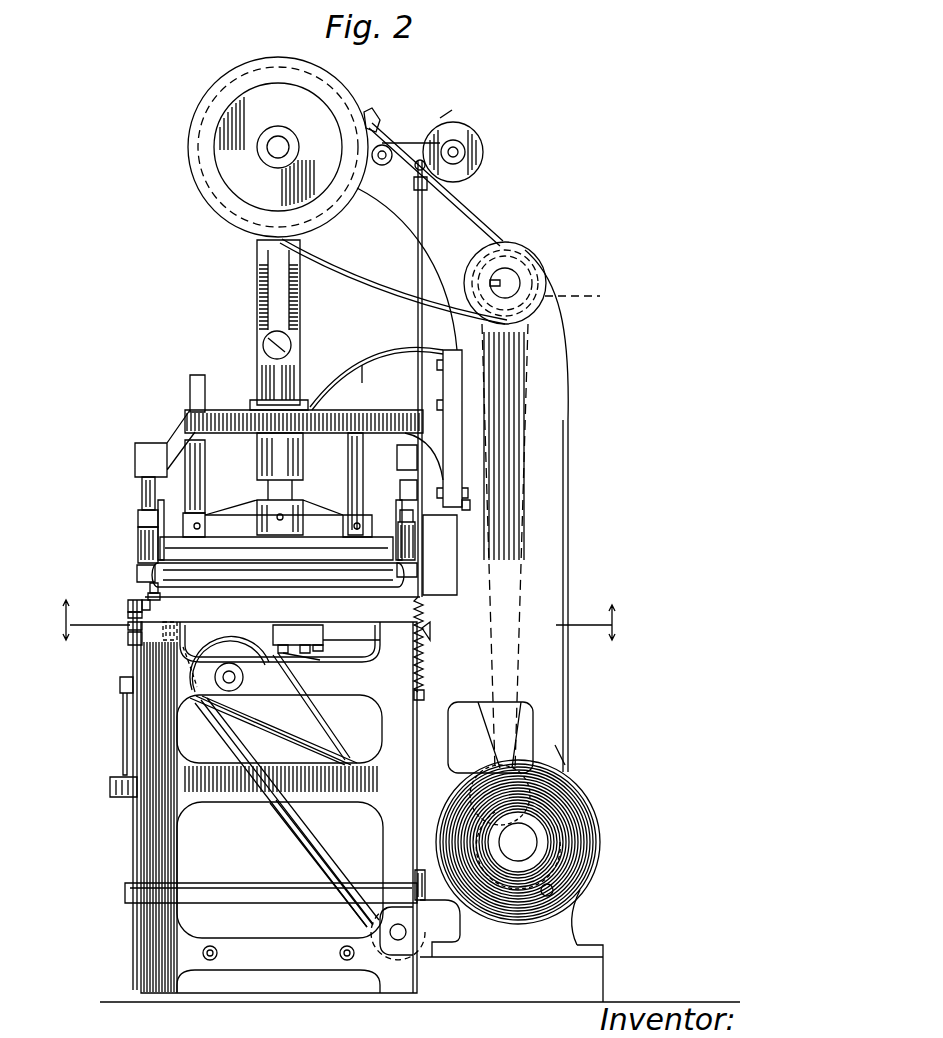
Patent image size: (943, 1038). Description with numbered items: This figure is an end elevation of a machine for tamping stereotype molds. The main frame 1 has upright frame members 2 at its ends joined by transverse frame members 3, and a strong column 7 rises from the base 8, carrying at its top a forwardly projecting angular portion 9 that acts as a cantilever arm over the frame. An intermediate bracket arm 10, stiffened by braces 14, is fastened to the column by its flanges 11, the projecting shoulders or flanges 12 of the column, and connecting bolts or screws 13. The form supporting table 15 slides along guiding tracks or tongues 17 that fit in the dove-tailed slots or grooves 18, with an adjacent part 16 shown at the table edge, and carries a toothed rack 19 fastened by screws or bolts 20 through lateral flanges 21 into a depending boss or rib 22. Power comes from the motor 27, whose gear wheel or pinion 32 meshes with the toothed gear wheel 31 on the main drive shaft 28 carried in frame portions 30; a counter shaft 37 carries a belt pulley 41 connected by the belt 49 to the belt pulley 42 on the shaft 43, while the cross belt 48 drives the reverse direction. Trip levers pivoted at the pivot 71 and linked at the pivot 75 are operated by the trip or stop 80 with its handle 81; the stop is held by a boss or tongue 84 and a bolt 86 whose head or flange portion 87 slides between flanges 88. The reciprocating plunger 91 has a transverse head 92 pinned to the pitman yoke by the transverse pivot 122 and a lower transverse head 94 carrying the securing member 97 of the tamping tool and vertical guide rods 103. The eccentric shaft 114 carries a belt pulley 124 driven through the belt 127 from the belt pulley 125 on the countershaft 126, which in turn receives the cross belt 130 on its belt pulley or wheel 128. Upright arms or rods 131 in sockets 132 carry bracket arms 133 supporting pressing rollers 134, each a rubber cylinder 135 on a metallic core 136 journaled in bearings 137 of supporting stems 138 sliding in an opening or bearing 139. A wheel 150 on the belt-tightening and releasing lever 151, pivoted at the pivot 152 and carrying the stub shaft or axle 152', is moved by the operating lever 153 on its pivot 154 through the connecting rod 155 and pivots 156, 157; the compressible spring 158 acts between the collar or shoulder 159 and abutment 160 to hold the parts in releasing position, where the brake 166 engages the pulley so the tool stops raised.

The main frame 1 is at (124, 844).
The upright frame members 2 is at (150, 862).
The transverse frame members 3 is at (262, 945).
The upright column 7 is at (553, 480).
The base 8 is at (437, 990).
The forwardly projecting angular portion 9 is at (395, 203).
The bracket arm 10 is at (330, 408).
The flanges 11 is at (447, 383).
The projecting shoulders or flanges 12 is at (465, 395).
The connecting bolts or screws 13 is at (467, 490).
The braces 14 is at (362, 380).
The form supporting table 15 is at (155, 594).
The collar 16 is at (150, 585).
The guiding tracks or tongues 17 is at (427, 633).
The dove-tailed slots or grooves 18 is at (230, 612).
The toothed rack 19 is at (300, 656).
The screws or bolts 20 is at (345, 665).
The lateral flanges 21 is at (285, 640).
The depending boss or rib 22 is at (325, 637).
The motor 27 is at (602, 843).
The main drive shaft 28 is at (540, 760).
The frame portions 30 is at (560, 745).
The toothed gear wheel 31 is at (565, 765).
The gear wheel or pinion 32 is at (550, 830).
The counter shaft 37 is at (462, 935).
The belt pulley 41 is at (360, 920).
The belt pulley 42 is at (245, 712).
The shaft 43 is at (262, 678).
The cross belt 48 is at (320, 828).
The belt 49 is at (305, 852).
The pivot 71 is at (110, 786).
The pivot 75 is at (120, 690).
The trip or stop 80 is at (128, 606).
The handle 81 is at (130, 626).
The boss or tongue 84 is at (150, 606).
The bolt 86 is at (128, 610).
The head or flange portion 87 is at (179, 654).
The flanges 88 is at (135, 640).
The reciprocating plunger 91 is at (262, 373).
The transverse head 92 is at (228, 410).
The transverse head 94 is at (312, 518).
The upper body portion or securing member 97 is at (327, 552).
The vertical guide rods 103 is at (222, 462).
The shaft 114 is at (278, 147).
The transverse pivot 122 is at (268, 338).
The belt pulley 124 is at (235, 100).
The belt pulley 125 is at (520, 248).
The countershaft 126 is at (513, 283).
The belt 127 is at (487, 220).
The belt pulley or wheel 128 is at (588, 298).
The cross belt 130 is at (525, 578).
The upright arms or rods 131 is at (143, 478).
The sockets 132 is at (140, 448).
The bracket arms 133 is at (140, 512).
The pressing rollers 134 is at (230, 560).
The cylinders 135 is at (256, 587).
The metallic core or body 136 is at (168, 572).
The bearings 137 is at (150, 580).
The supporting stems or plungers 138 is at (457, 516).
The opening or bearing 139 is at (140, 545).
The wheel 150 is at (482, 143).
The belt-tightening and releasing lever 151 is at (412, 135).
The pivot 152 is at (398, 125).
The stub shaft or axle 152' is at (490, 152).
The operating lever 153 is at (232, 885).
The pivot 154 is at (580, 892).
The connecting rod 155 is at (425, 222).
The pivot 156 is at (450, 125).
The pivot 157 is at (452, 920).
The compressible spring 158 is at (424, 655).
The collar or shoulder 159 is at (458, 631).
The abutment 160 is at (430, 680).
The brake 166 is at (374, 108).